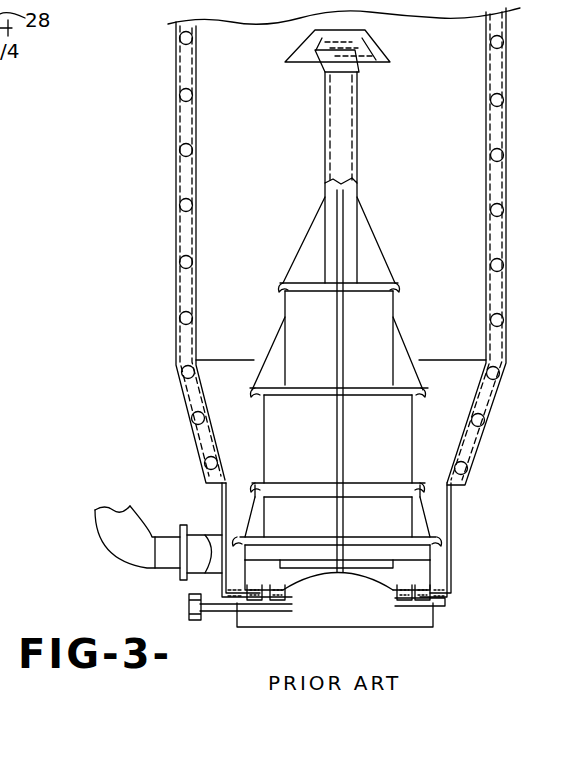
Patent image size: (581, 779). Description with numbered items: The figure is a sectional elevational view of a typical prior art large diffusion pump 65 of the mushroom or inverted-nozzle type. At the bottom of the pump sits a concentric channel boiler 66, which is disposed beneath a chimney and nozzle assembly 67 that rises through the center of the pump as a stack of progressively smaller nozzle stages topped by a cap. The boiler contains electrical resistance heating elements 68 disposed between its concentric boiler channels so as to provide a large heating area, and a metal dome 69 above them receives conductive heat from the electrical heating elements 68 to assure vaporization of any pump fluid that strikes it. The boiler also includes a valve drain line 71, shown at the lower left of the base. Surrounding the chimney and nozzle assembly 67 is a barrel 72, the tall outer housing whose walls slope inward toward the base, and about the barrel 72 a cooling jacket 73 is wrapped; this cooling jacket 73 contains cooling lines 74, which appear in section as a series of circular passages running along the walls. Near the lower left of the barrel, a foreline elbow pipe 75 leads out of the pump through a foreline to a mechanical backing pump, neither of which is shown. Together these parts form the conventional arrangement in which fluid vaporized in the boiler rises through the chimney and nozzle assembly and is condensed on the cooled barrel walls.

The diffusion pump 65 is at (148, 221).
The concentric channel boiler 66 is at (435, 612).
The chimney and nozzle assembly 67 is at (389, 168).
The electrical resistance heating elements 68 is at (422, 588).
The metal dome 69 is at (377, 573).
The valve drain line 71 is at (213, 612).
The barrel 72 is at (463, 302).
The cooling jacket 73 is at (176, 123).
The cooling lines 74 is at (178, 265).
The foreline elbow pipe 75 is at (100, 544).